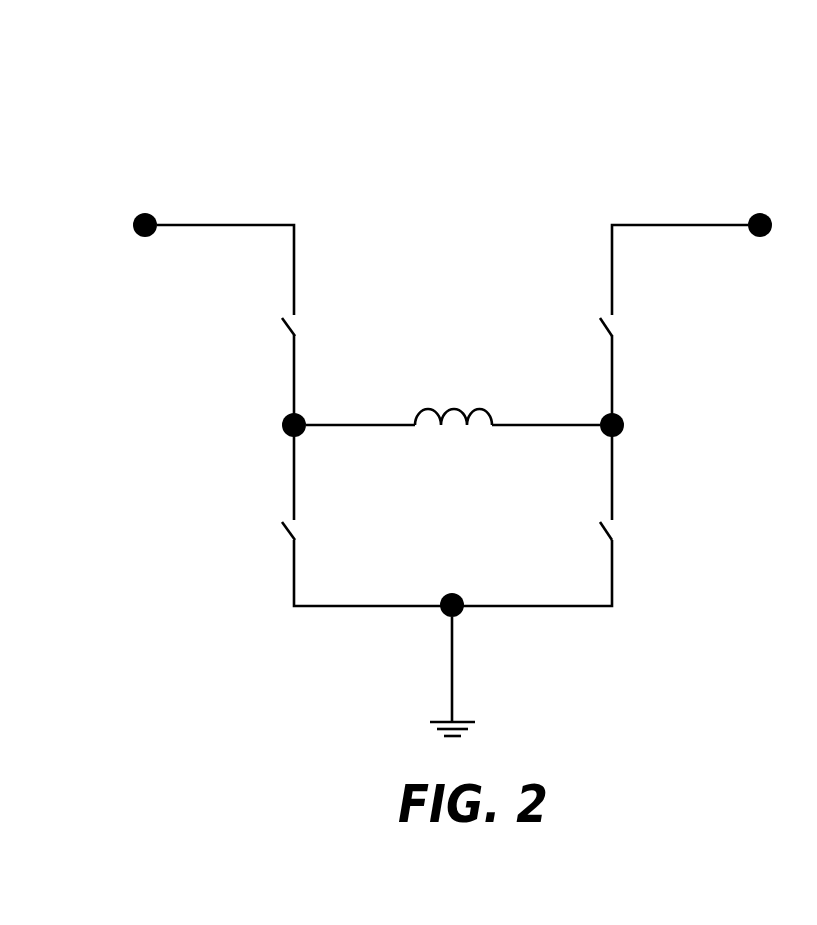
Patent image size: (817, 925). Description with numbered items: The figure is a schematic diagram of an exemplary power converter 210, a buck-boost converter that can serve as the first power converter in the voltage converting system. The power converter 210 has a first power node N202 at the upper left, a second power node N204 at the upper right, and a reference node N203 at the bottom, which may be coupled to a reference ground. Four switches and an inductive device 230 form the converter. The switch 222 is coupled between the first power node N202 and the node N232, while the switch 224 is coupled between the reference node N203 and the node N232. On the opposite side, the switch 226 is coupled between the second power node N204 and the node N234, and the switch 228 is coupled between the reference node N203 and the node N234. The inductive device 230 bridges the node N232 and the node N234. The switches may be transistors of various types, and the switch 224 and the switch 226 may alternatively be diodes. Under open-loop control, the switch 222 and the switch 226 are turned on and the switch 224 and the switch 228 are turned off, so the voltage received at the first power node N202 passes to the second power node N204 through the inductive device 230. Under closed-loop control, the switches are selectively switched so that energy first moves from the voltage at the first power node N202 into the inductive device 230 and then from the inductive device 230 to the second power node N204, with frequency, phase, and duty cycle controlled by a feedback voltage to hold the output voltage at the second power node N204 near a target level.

The power converter 210 is at (708, 70).
The first power node N202 is at (151, 213).
The second power node N204 is at (762, 213).
The switch 222 is at (283, 334).
The switch 224 is at (283, 537).
The switch 226 is at (603, 321).
The switch 228 is at (603, 523).
The inductive device 230 is at (452, 408).
The node N232 is at (282, 428).
The node N234 is at (626, 427).
The reference node N203 is at (463, 615).